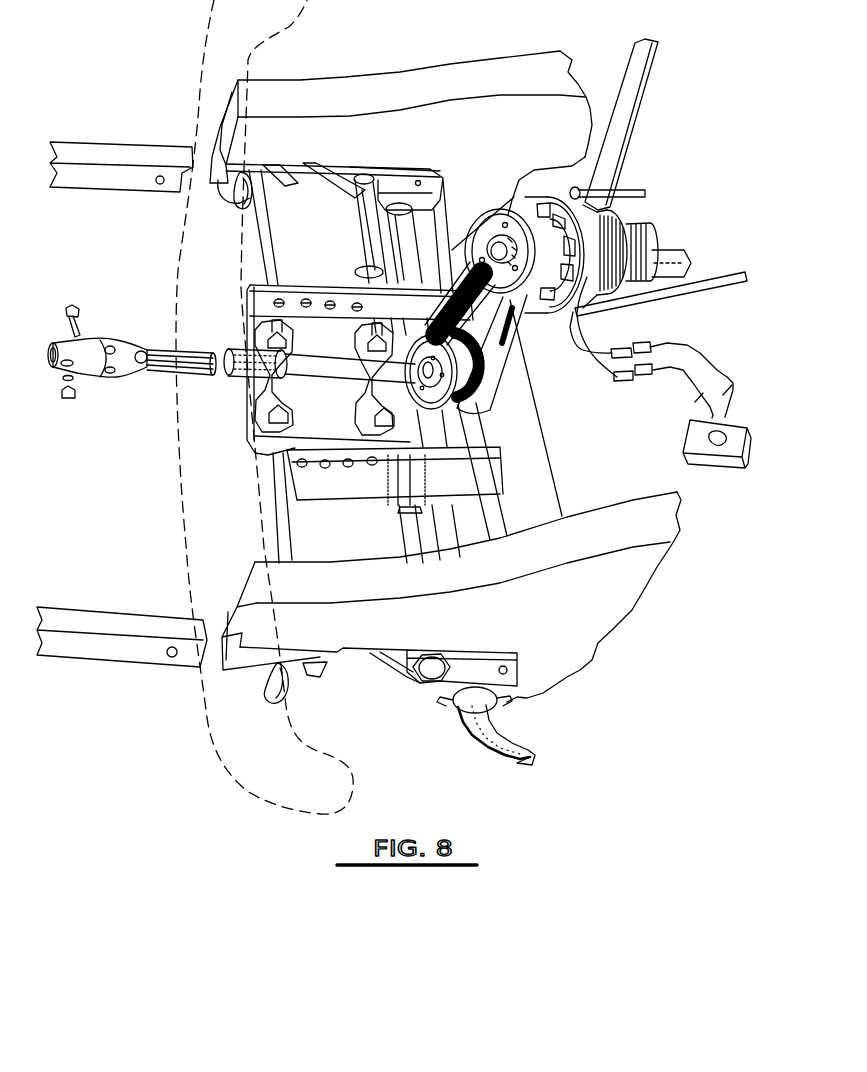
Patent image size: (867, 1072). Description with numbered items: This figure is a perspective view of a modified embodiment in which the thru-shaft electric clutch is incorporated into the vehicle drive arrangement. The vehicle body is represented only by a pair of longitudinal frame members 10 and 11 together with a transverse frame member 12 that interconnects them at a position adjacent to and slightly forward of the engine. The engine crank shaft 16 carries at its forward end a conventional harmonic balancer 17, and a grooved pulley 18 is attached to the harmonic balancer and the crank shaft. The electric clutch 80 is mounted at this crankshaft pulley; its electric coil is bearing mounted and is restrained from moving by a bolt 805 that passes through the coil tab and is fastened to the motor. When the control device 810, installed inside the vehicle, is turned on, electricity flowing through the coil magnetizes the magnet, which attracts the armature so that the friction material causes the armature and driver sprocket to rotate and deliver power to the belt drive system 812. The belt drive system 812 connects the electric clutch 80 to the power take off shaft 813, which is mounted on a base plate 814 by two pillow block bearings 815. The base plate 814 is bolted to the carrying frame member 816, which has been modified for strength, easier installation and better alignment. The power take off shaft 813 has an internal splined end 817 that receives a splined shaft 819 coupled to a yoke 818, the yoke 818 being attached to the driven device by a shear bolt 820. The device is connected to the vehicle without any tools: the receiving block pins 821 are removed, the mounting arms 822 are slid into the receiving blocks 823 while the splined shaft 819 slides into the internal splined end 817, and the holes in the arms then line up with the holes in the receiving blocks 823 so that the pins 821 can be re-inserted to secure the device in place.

The longitudinal frame member 10 is at (406, 72).
The longitudinal frame member 11 is at (351, 569).
The transverse frame member 12 is at (526, 423).
The crank shaft 16 is at (684, 262).
The harmonic balancer 17 is at (628, 246).
The pulley 18 is at (614, 235).
The electric clutch 80 is at (549, 196).
The bolt 805 is at (628, 193).
The control device 810 is at (700, 437).
The belt drive system 812 is at (497, 357).
The power take off shaft 813 is at (347, 368).
The base plate 814 is at (341, 432).
The pillow block bearings 815 is at (357, 338).
The carrying frame member 816 is at (333, 278).
The internal splined end 817 is at (233, 377).
The yoke 818 is at (110, 340).
The splined shaft 819 is at (203, 350).
The shear bolt 820 is at (75, 306).
The receiving block pins 821 is at (252, 193).
The mounting arms 822 is at (128, 157).
The receiving blocks 823 is at (220, 183).